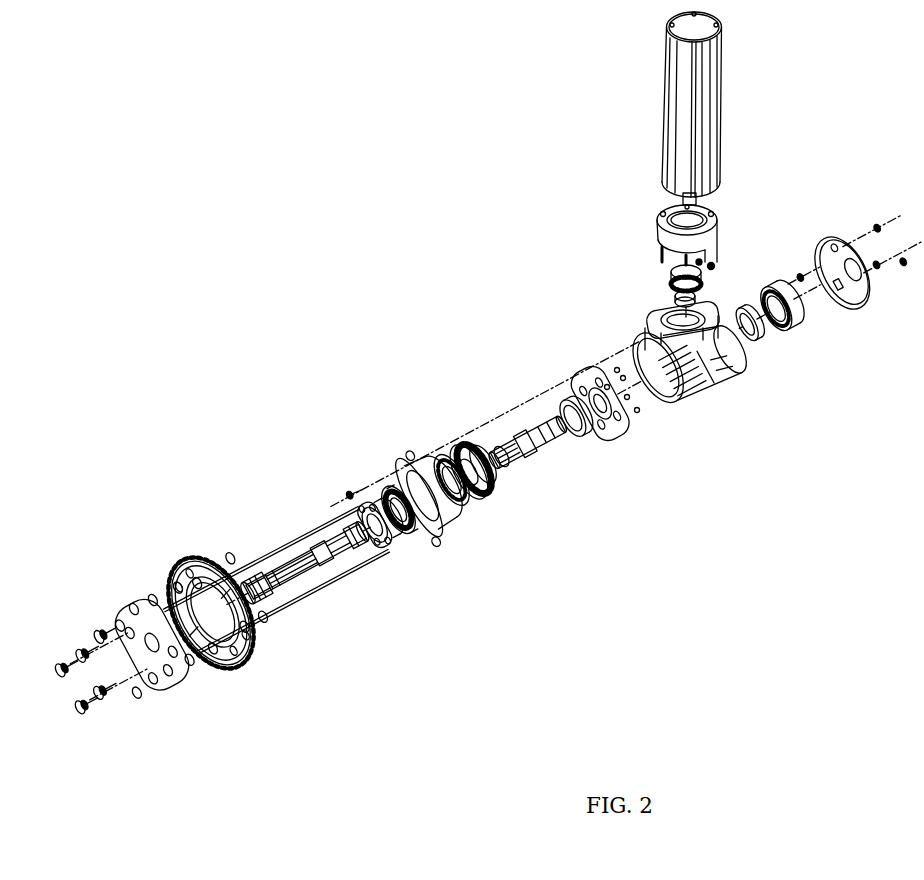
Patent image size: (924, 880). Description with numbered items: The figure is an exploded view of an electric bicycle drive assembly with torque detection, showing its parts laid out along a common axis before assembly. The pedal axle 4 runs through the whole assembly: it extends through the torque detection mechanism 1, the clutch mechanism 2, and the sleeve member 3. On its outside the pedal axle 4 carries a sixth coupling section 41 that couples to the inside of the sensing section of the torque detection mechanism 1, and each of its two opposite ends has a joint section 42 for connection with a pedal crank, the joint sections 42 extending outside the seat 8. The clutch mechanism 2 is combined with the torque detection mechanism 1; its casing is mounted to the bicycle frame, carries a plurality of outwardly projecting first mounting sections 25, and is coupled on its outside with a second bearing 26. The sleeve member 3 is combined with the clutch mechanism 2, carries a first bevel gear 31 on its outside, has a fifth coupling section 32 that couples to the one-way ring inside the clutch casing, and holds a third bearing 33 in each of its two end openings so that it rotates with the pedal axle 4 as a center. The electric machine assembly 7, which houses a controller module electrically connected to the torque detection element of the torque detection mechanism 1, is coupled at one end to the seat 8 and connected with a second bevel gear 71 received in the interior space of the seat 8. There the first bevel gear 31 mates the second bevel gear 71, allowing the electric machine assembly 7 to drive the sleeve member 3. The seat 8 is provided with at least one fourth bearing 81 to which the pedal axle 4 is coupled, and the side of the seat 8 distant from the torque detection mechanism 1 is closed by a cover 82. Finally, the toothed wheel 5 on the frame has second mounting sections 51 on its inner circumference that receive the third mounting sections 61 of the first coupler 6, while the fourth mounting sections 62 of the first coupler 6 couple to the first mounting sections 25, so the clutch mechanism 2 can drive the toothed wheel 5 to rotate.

The torque detection mechanism 1 is at (374, 542).
The clutch mechanism 2 is at (410, 480).
The first mounting sections 25 is at (412, 530).
The second bearing 26 is at (445, 460).
The sleeve member 3 is at (540, 416).
The first bevel gear 31 is at (472, 440).
The fifth coupling section 32 is at (541, 445).
The third bearing 33 is at (583, 430).
The pedal axle 4 is at (312, 555).
The sixth coupling section 41 is at (272, 560).
The joint section 42 is at (254, 582).
The toothed wheel 5 is at (200, 556).
The second mounting sections 51 is at (242, 668).
The first coupler 6 is at (143, 620).
The third mounting sections 61 is at (155, 682).
The fourth mounting sections 62 is at (176, 665).
The electric machine assembly 7 is at (719, 108).
The second bevel gear 71 is at (668, 278).
The seat 8 is at (722, 388).
The fourth bearing 81 is at (745, 305).
The cover 82 is at (826, 238).